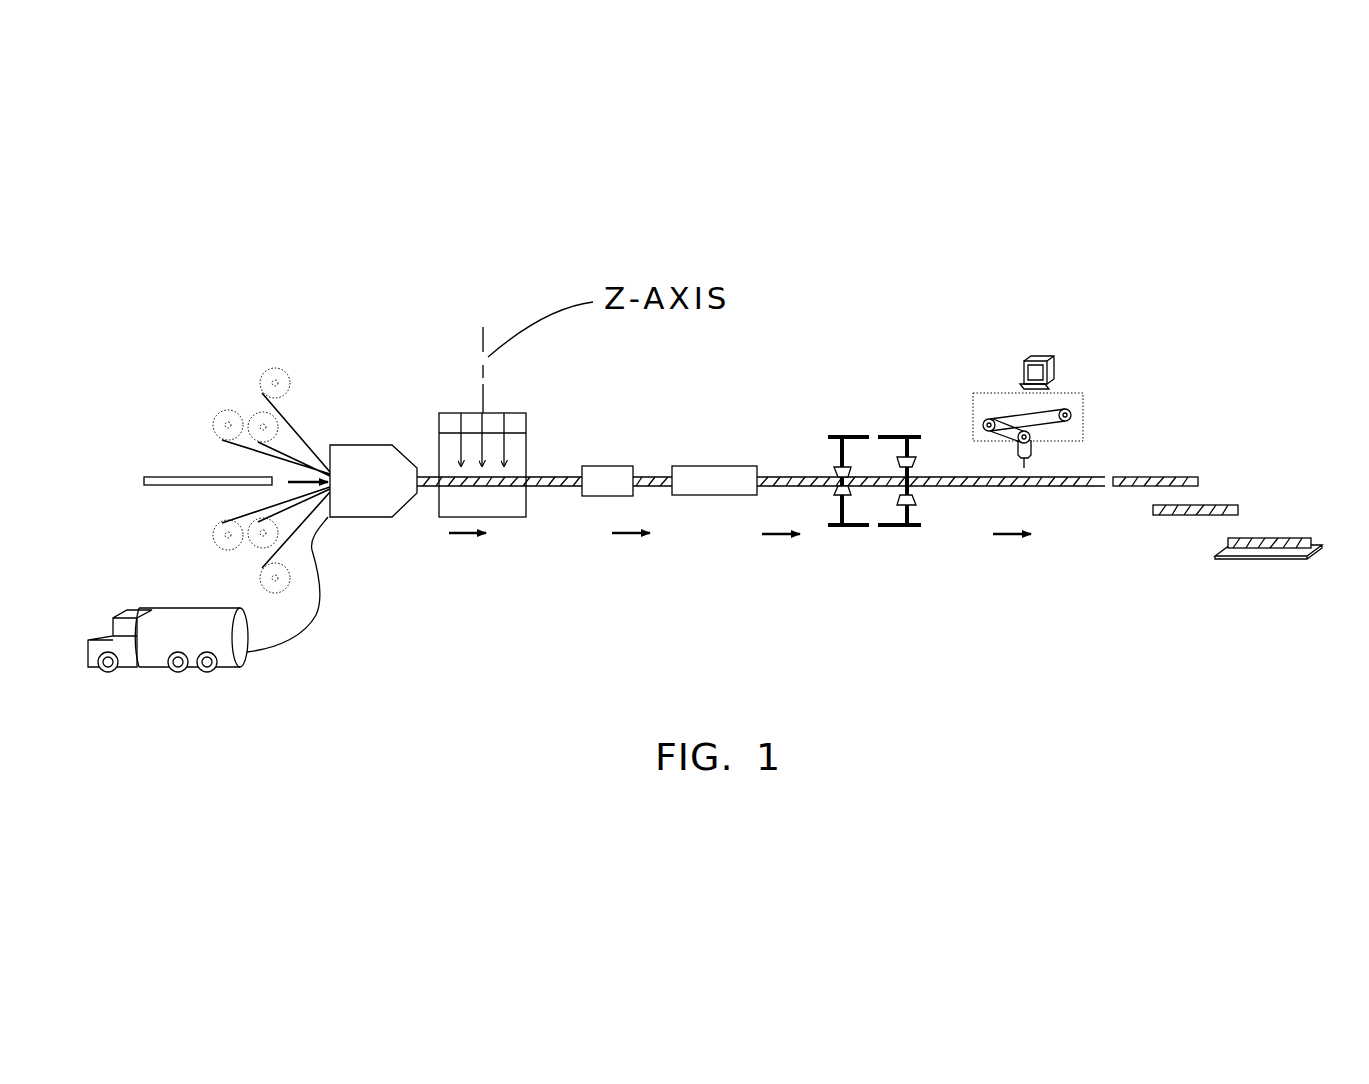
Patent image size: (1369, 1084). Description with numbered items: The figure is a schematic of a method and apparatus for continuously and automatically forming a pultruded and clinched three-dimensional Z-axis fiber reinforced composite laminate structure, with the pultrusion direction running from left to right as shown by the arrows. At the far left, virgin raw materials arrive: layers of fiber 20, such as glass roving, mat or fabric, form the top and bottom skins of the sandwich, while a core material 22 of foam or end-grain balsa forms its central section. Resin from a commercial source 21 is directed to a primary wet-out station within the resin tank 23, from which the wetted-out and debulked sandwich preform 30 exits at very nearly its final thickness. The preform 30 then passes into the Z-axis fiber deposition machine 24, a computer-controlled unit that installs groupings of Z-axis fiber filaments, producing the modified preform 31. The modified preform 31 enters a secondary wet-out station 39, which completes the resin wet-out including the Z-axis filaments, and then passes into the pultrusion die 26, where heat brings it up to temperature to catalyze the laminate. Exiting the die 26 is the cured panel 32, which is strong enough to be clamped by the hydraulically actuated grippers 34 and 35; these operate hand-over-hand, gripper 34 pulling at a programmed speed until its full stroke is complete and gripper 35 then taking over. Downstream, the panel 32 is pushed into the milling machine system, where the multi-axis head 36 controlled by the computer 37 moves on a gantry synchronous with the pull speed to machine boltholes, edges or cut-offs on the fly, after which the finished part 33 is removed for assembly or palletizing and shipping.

The fiber 20 is at (282, 368).
The commercial resin source 21 is at (176, 604).
The core material 22 is at (173, 476).
The resin tank 23 is at (380, 520).
The Z-axis fiber deposition machine 24 is at (516, 522).
The pultrusion die 26 is at (707, 503).
The sandwich preform 30 is at (430, 476).
The modified preform 31 is at (548, 494).
The cured composite laminate panel 32 is at (781, 487).
The part 33 is at (1158, 470).
The gripper 34 is at (824, 466).
The gripper 35 is at (924, 464).
The multi-axis head 36 is at (1032, 460).
The computer 37 is at (1062, 367).
The secondary wet-out station 39 is at (603, 463).